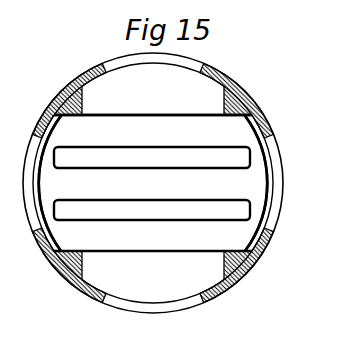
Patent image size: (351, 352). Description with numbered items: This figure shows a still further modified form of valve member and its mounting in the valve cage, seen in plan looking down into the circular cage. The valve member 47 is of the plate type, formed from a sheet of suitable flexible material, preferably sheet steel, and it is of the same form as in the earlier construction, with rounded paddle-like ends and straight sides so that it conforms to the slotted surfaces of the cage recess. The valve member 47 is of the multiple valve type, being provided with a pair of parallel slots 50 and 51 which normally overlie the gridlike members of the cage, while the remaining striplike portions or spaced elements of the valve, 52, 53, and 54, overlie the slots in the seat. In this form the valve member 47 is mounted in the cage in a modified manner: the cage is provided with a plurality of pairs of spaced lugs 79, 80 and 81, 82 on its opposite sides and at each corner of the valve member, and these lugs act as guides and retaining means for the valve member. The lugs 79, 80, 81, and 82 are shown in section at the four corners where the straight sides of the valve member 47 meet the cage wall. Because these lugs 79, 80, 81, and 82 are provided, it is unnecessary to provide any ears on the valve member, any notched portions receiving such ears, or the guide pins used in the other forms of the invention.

The valve member 47 is at (172, 112).
The slot 50 is at (248, 152).
The slot 51 is at (246, 208).
The striplike portion 52 is at (237, 130).
The striplike portion 53 is at (242, 183).
The striplike portion 54 is at (244, 229).
The lug 79 is at (67, 88).
The lug 80 is at (236, 109).
The lug 81 is at (64, 256).
The lug 82 is at (258, 261).